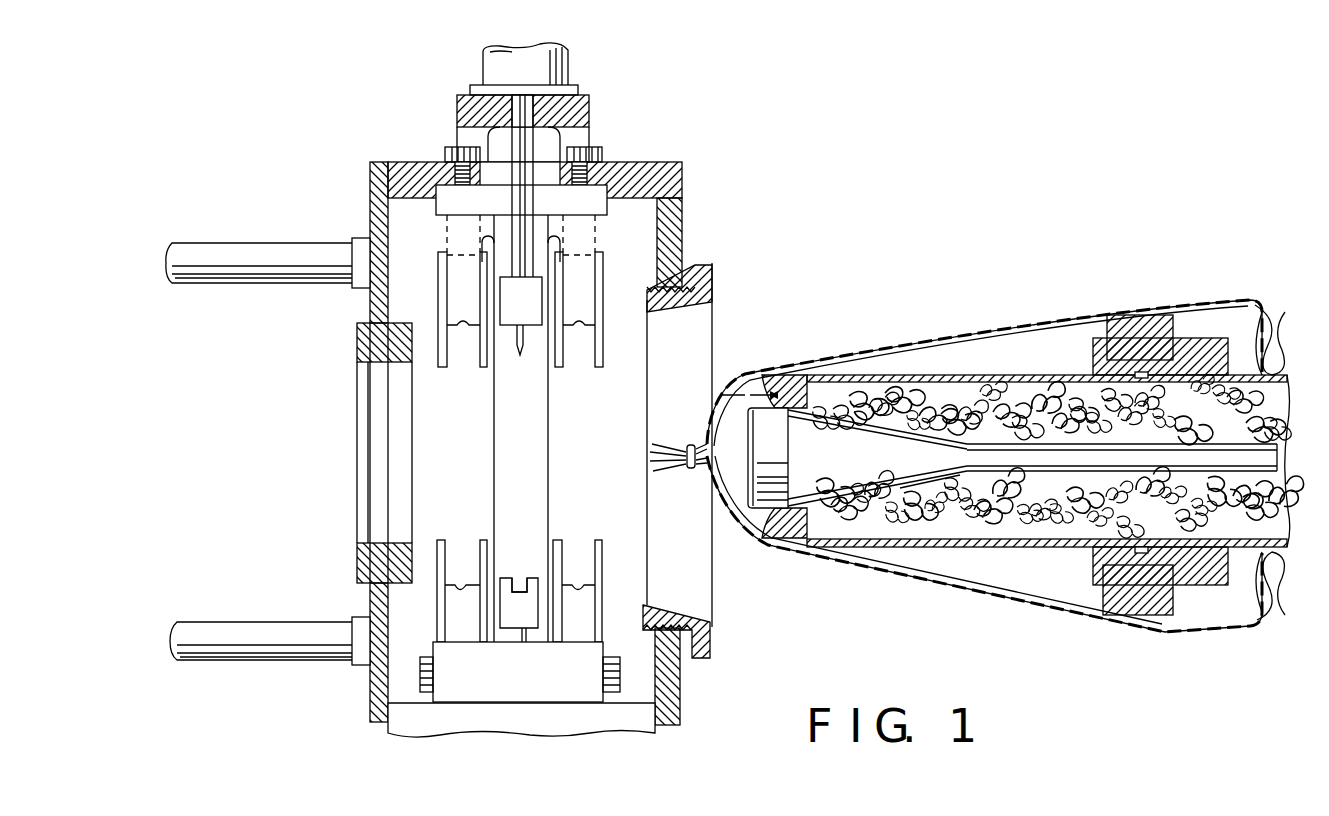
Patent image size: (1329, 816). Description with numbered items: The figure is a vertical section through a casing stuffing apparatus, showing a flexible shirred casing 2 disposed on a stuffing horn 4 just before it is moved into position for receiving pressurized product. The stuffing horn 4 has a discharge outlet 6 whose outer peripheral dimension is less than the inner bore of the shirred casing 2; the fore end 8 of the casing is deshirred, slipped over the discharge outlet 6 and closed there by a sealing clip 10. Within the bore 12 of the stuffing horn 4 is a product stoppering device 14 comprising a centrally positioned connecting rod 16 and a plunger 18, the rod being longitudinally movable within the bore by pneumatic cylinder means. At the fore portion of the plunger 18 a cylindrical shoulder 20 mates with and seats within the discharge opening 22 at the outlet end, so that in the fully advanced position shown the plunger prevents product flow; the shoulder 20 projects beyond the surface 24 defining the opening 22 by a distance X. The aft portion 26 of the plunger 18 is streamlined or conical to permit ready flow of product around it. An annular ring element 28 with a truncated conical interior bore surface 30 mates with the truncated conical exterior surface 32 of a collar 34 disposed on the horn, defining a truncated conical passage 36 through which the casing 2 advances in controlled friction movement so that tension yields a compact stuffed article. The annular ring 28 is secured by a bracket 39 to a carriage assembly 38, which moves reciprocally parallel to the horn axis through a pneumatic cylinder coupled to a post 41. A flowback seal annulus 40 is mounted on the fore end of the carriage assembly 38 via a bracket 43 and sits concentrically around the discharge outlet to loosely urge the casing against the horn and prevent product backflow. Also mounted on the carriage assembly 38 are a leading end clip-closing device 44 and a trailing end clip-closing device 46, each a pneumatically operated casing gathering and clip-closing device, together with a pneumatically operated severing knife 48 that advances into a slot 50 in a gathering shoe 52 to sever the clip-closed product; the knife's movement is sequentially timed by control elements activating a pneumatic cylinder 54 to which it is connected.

The shirred casing 2 is at (1267, 312).
The stuffing horn 4 is at (913, 375).
The discharge outlet 6 is at (782, 560).
The fore end 8 is at (1013, 326).
The sealing clip 10 is at (690, 444).
The bore 12 is at (857, 528).
The product stoppering device 14 is at (912, 495).
The connecting rod 16 is at (1275, 446).
The plunger 18 is at (848, 425).
The cylindrical shoulder 20 is at (815, 382).
The discharge opening 22 is at (758, 535).
The surface 24 is at (768, 550).
The aft portion 26 is at (918, 450).
The annular ring element 28 is at (712, 278).
The interior bore surface 30 is at (670, 607).
The exterior surface 32 is at (1109, 316).
The collar 34 is at (1165, 318).
The truncated conical passage 36 is at (712, 318).
The carriage assembly 38 is at (585, 735).
The bracket 39 is at (680, 210).
The flowback seal annulus 40 is at (357, 340).
The post 41 is at (242, 255).
The bracket 43 is at (372, 181).
The leading end clip-closing device 44 is at (595, 302).
The trailing end clip-closing device 46 is at (450, 290).
The severing knife 48 is at (520, 355).
The slot 50 is at (519, 590).
The gathering shoe 52 is at (525, 578).
The pneumatic cylinder 54 is at (560, 66).